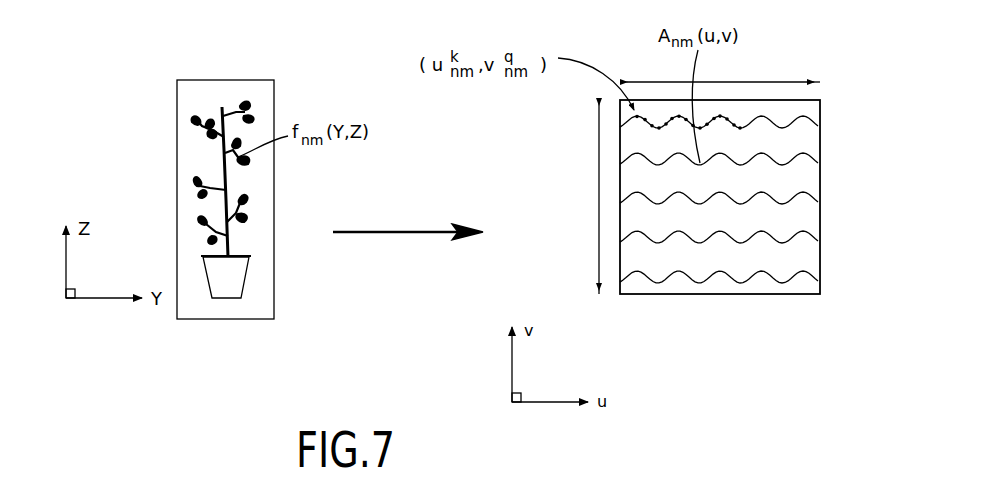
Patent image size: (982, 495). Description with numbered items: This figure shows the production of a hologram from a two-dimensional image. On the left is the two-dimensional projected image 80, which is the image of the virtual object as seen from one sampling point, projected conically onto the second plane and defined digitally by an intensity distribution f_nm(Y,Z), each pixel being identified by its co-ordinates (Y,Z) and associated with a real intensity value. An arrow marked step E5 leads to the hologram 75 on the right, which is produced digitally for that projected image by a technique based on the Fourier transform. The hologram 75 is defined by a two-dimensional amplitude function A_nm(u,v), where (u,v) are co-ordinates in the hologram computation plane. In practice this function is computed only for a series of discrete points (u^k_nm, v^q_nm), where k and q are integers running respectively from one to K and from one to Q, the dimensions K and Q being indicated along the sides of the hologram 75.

The two-dimensional projected image 80 is at (232, 319).
The hologram 75 is at (727, 295).
The step E5 is at (408, 245).
The number of discrete points in the u direction K is at (720, 70).
The number of discrete points in the v direction Q is at (589, 197).